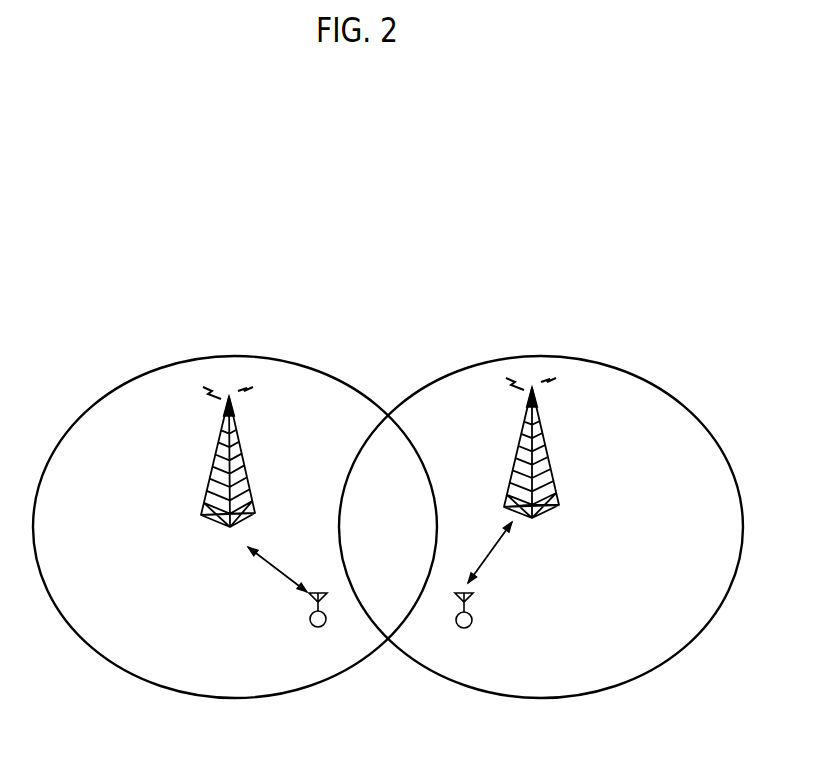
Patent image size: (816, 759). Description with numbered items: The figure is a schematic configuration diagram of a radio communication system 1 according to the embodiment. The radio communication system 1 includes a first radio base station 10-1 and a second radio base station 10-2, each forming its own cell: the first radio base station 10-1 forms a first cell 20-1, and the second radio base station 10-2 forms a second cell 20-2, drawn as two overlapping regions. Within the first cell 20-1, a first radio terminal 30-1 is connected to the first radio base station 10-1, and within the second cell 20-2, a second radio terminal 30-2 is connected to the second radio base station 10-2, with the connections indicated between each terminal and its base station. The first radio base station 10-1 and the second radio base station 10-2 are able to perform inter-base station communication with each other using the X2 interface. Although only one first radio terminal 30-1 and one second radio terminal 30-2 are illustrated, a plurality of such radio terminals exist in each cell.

The radio communication system 1 is at (390, 268).
The cell 20-2 is at (157, 367).
The cell 20-1 is at (449, 365).
The radio base station 10-2 is at (295, 424).
The radio base station 10-1 is at (543, 442).
The radio terminal 30-2 is at (310, 619).
The radio terminal 30-1 is at (472, 620).